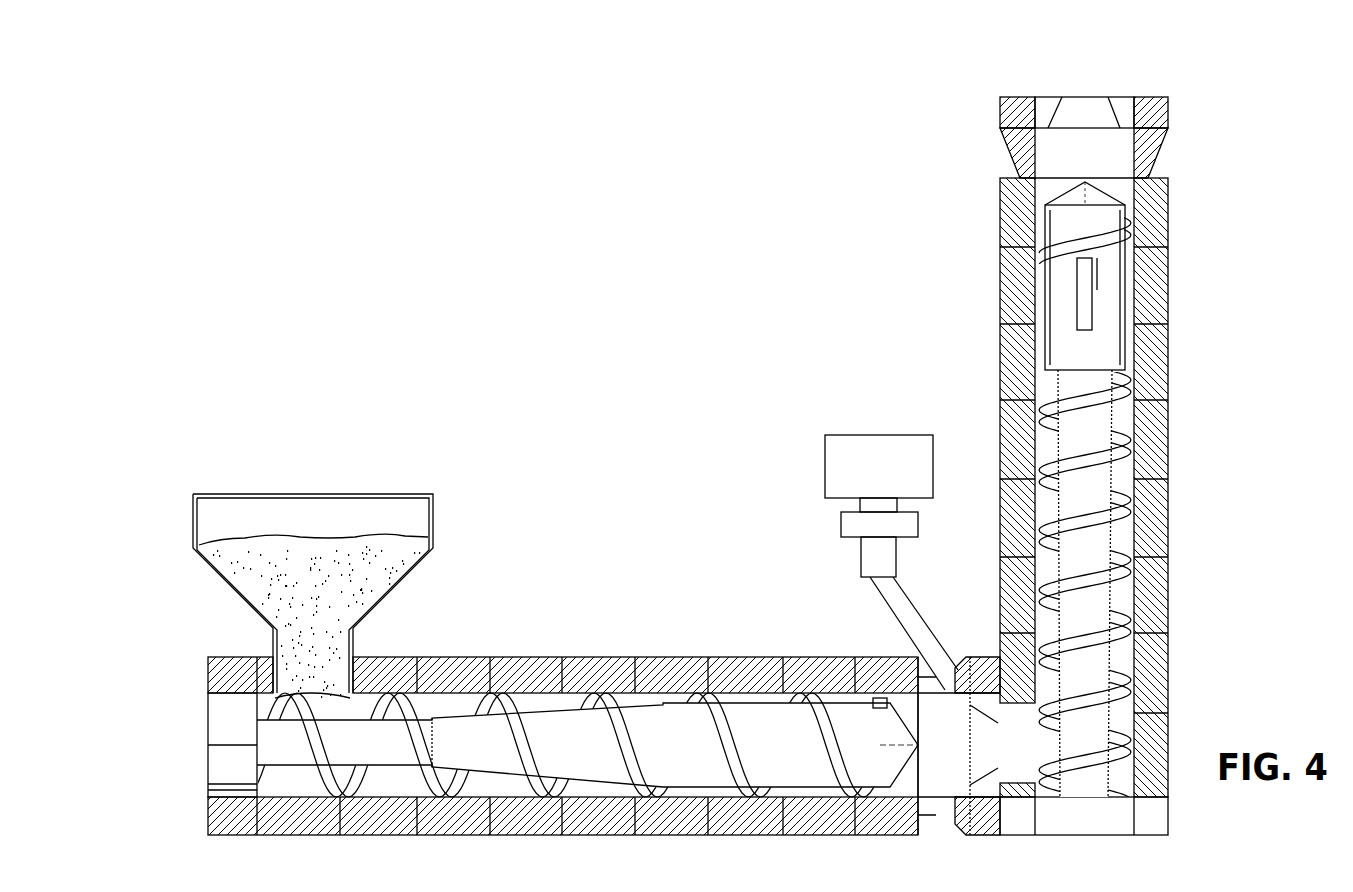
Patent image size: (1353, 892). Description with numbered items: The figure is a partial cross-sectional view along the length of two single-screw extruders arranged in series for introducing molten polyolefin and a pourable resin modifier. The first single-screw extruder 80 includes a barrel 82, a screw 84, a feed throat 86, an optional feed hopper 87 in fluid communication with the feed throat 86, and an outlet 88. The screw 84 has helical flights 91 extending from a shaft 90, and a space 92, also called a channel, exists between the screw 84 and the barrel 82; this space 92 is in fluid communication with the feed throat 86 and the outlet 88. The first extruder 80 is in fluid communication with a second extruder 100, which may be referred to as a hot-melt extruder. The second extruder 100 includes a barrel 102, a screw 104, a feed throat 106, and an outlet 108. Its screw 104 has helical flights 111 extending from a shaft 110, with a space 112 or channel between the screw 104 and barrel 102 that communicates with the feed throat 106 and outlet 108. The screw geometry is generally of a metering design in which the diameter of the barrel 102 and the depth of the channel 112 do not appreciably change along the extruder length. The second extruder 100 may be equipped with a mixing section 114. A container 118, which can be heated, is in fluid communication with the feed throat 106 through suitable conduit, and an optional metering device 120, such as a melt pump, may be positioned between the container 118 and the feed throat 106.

The single-screw extruder 80 is at (589, 467).
The barrel 82 is at (440, 657).
The screw 84 is at (263, 735).
The feed throat 86 is at (310, 672).
The feed hopper 87 is at (433, 531).
The outlet 88 is at (931, 734).
The shaft 90 is at (365, 760).
The helical flight 91 is at (430, 797).
The space 92 is at (578, 695).
The second extruder 100 is at (916, 247).
The barrel 102 is at (1000, 350).
The screw 104 is at (1090, 793).
The feed throat 106 is at (1016, 748).
The outlet 108 is at (1080, 130).
The shaft 110 is at (1090, 697).
The helical flight 111 is at (1120, 445).
The space 112 is at (1128, 578).
The mixing section 114 is at (1104, 294).
The container 118 is at (825, 459).
The metering device 120 is at (841, 530).